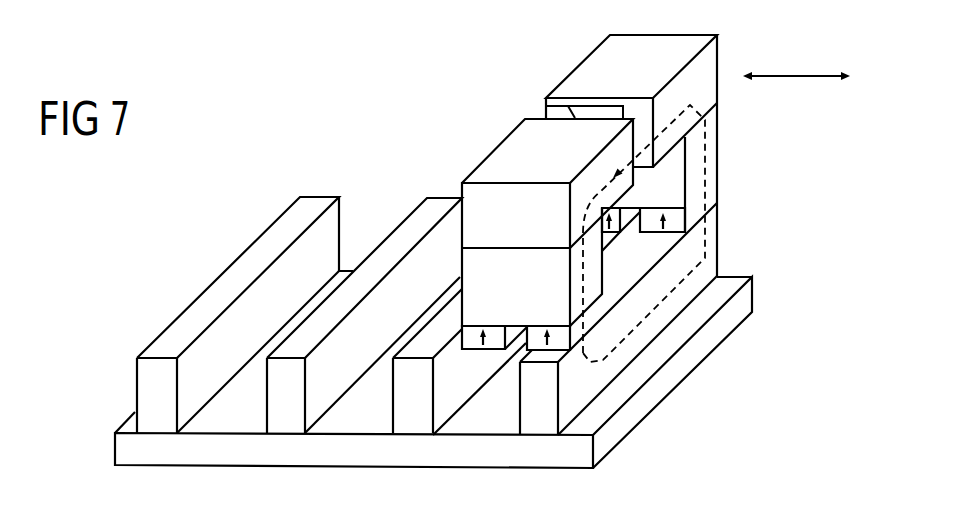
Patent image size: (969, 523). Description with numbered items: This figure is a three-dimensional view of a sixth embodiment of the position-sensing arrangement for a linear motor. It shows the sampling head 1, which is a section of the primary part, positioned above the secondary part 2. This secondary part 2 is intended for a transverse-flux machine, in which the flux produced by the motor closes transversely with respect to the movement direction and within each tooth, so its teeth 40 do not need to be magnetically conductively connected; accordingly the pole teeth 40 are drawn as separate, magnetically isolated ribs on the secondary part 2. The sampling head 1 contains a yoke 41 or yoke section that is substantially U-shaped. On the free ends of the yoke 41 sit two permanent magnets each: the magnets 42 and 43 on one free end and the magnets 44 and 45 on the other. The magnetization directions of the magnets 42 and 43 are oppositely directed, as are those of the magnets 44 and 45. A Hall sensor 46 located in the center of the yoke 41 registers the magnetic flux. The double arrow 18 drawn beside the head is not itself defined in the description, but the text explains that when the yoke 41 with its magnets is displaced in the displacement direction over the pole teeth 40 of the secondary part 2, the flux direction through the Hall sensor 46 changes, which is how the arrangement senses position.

The sampling head 1 is at (560, 68).
The secondary part 2 is at (207, 270).
The direction of current flow 18 is at (803, 74).
The teeth 40 is at (160, 408).
The yoke 41 is at (472, 190).
The permanent magnet 42 is at (472, 343).
The permanent magnet 43 is at (535, 344).
The permanent magnet 44 is at (613, 240).
The permanent magnet 45 is at (676, 224).
The Hall sensor 46 is at (572, 113).